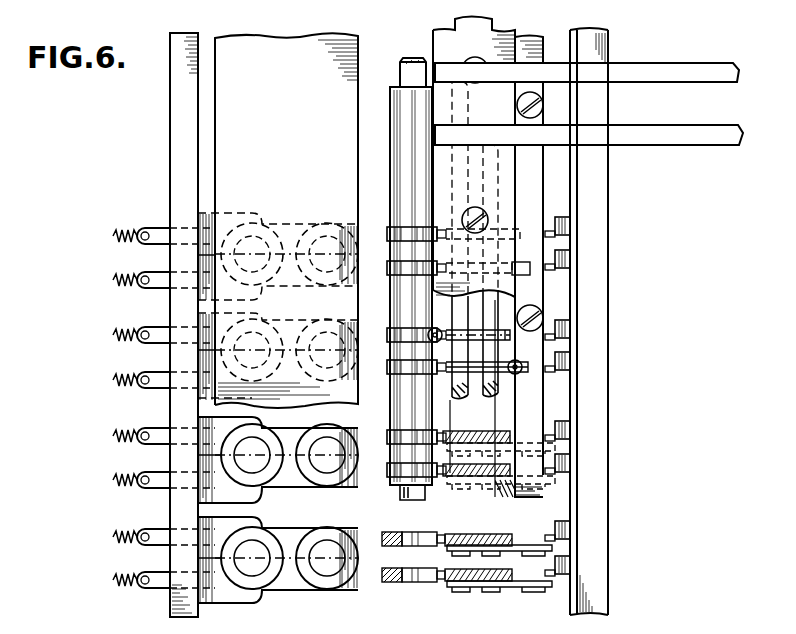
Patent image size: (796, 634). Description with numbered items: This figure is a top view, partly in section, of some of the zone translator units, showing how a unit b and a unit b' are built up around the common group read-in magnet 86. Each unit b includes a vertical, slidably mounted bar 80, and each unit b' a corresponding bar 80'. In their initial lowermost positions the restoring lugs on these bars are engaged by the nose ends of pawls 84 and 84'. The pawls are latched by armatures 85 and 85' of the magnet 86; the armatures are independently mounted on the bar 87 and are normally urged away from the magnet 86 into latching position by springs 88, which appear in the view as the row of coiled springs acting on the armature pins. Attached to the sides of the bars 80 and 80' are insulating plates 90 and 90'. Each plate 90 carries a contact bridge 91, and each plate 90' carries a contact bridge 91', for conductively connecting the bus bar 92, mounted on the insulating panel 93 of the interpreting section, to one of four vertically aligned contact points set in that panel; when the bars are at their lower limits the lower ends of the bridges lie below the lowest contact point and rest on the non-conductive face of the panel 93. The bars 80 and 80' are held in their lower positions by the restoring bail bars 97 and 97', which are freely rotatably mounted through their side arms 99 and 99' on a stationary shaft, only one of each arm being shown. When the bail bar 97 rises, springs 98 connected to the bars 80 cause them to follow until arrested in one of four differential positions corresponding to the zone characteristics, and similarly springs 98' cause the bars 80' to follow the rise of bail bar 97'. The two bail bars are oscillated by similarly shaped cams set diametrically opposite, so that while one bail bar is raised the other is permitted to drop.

The slidably mounted bar 80 is at (478, 592).
The slidably mounted bar 80' is at (477, 488).
The pawl 84 is at (405, 419).
The pawl 84' is at (397, 336).
The armature 85 is at (293, 408).
The armature 85' is at (362, 391).
The group read-in magnet 86 is at (304, 234).
The bar 87 is at (170, 455).
The spring 88 is at (117, 335).
The insulating plate 90 is at (499, 601).
The insulating plate 90' is at (501, 499).
The contact bridge 91 is at (599, 415).
The contact bridge 91' is at (601, 379).
The bus bar 92 is at (573, 405).
The insulating panel 93 is at (600, 355).
The restoring bail bar 97 is at (482, 222).
The restoring bail bar 97' is at (462, 245).
The spring 98 is at (519, 381).
The spring 98' is at (403, 368).
The side arm 99 is at (589, 149).
The side arm 99' is at (587, 86).
The zone translator unit b is at (375, 601).
The zone translator unit b' is at (386, 524).